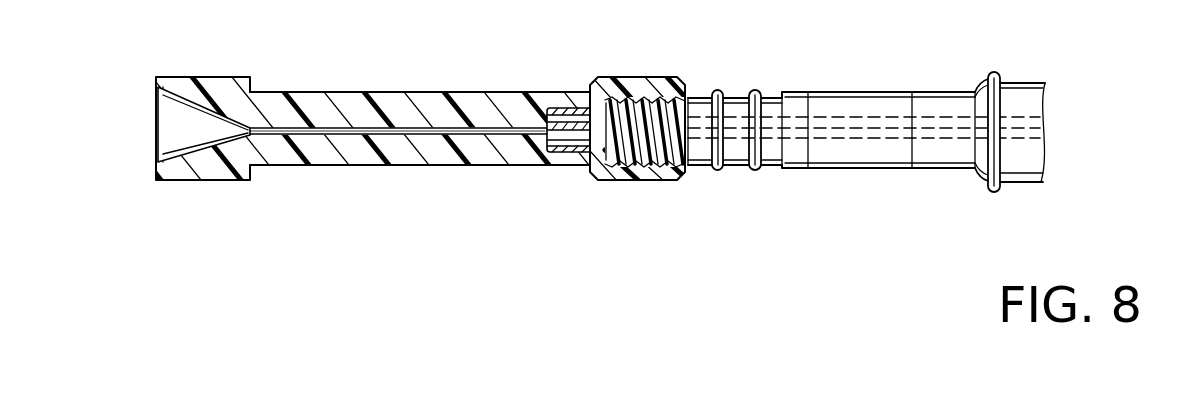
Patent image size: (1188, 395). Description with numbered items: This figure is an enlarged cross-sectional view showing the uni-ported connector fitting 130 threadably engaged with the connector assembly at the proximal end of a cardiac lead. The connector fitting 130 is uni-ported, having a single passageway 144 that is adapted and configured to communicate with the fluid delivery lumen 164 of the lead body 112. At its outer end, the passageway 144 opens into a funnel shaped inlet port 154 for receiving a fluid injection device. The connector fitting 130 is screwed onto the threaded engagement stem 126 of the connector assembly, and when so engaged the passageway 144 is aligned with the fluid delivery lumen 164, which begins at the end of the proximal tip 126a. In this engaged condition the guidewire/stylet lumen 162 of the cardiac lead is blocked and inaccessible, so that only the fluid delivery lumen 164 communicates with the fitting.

The lead body 112 is at (1027, 82).
The threaded engagement stem 126 is at (642, 98).
The proximal tip 126a is at (575, 152).
The uni-ported connector fitting 130 is at (464, 73).
The passageway 144 is at (338, 134).
The funnel shaped inlet port 154 is at (190, 133).
The guidewire/stylet lumen 162 is at (851, 116).
The fluid delivery lumen 164 is at (850, 140).